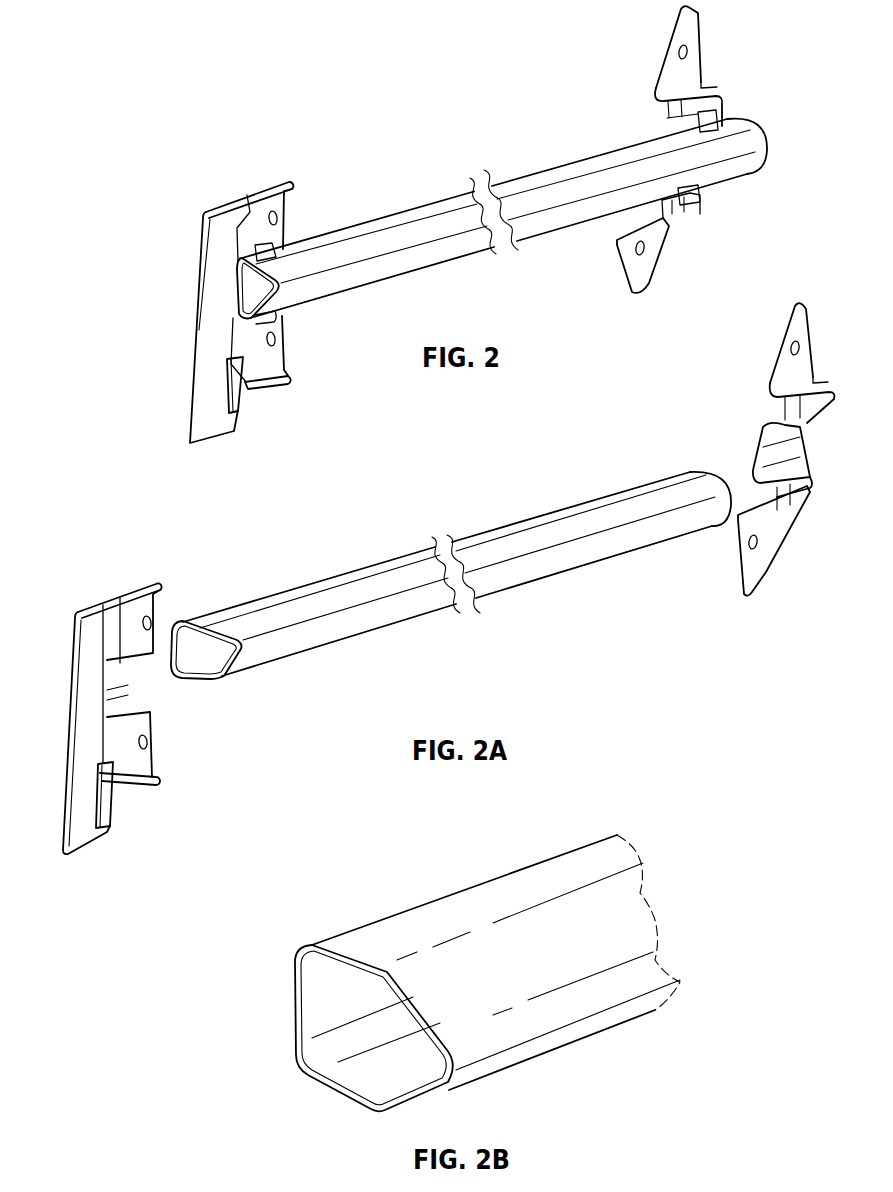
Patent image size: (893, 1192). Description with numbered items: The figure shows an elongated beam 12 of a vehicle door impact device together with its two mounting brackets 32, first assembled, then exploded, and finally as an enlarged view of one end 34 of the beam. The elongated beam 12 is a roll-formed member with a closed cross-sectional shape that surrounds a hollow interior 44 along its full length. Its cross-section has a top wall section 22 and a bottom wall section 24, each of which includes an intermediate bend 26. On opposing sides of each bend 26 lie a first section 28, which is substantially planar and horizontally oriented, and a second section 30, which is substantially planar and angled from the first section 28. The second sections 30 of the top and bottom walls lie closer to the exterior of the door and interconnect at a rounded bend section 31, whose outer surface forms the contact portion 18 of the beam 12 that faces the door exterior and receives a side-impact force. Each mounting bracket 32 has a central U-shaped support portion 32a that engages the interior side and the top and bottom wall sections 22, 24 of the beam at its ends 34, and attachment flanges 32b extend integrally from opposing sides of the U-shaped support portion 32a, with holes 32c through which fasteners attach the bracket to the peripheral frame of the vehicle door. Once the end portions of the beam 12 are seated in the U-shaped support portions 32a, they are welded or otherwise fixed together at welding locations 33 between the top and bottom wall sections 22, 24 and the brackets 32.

In FIG. 2, the elongated beam 12 is at (411, 188).
In FIG. 2A, the elongated beam 12 is at (329, 565).
In FIG. 2B, the elongated beam 12 is at (372, 886).
In FIG. 2, the contact portion 18 is at (430, 246).
In FIG. 2A, the contact portion 18 is at (386, 609).
In FIG. 2B, the contact portion 18 is at (586, 1020).
In FIG. 2B, the top wall section 22 is at (510, 868).
In FIG. 2B, the bottom wall section 24 is at (327, 1103).
In FIG. 2, the intermediate bend 26 is at (240, 316).
In FIG. 2A, the intermediate bend 26 is at (208, 679).
In FIG. 2B, the intermediate bend 26 is at (381, 1112).
In FIG. 2, the first section 28 is at (238, 262).
In FIG. 2A, the first section 28 is at (200, 619).
In FIG. 2B, the first section 28 is at (358, 953).
In FIG. 2, the second section 30 is at (284, 248).
In FIG. 2A, the second section 30 is at (230, 632).
In FIG. 2B, the second section 30 is at (421, 997).
In FIG. 2B, the rounded bend section 31 is at (515, 1048).
In FIG. 2, the mounting bracket 32 is at (262, 190).
In FIG. 2A, the mounting bracket 32 is at (130, 592).
In FIG. 2A, the U-shaped support portion 32a is at (110, 683).
In FIG. 2A, the attachment flange 32b is at (130, 770).
In FIG. 2A, the hole 32c is at (804, 344).
In FIG. 2, the welding location 33 is at (720, 127).
In FIG. 2, the end 34 is at (301, 340).
In FIG. 2A, the end 34 is at (179, 692).
In FIG. 2B, the end 34 is at (297, 928).
In FIG. 2B, the hollow interior 44 is at (343, 1008).